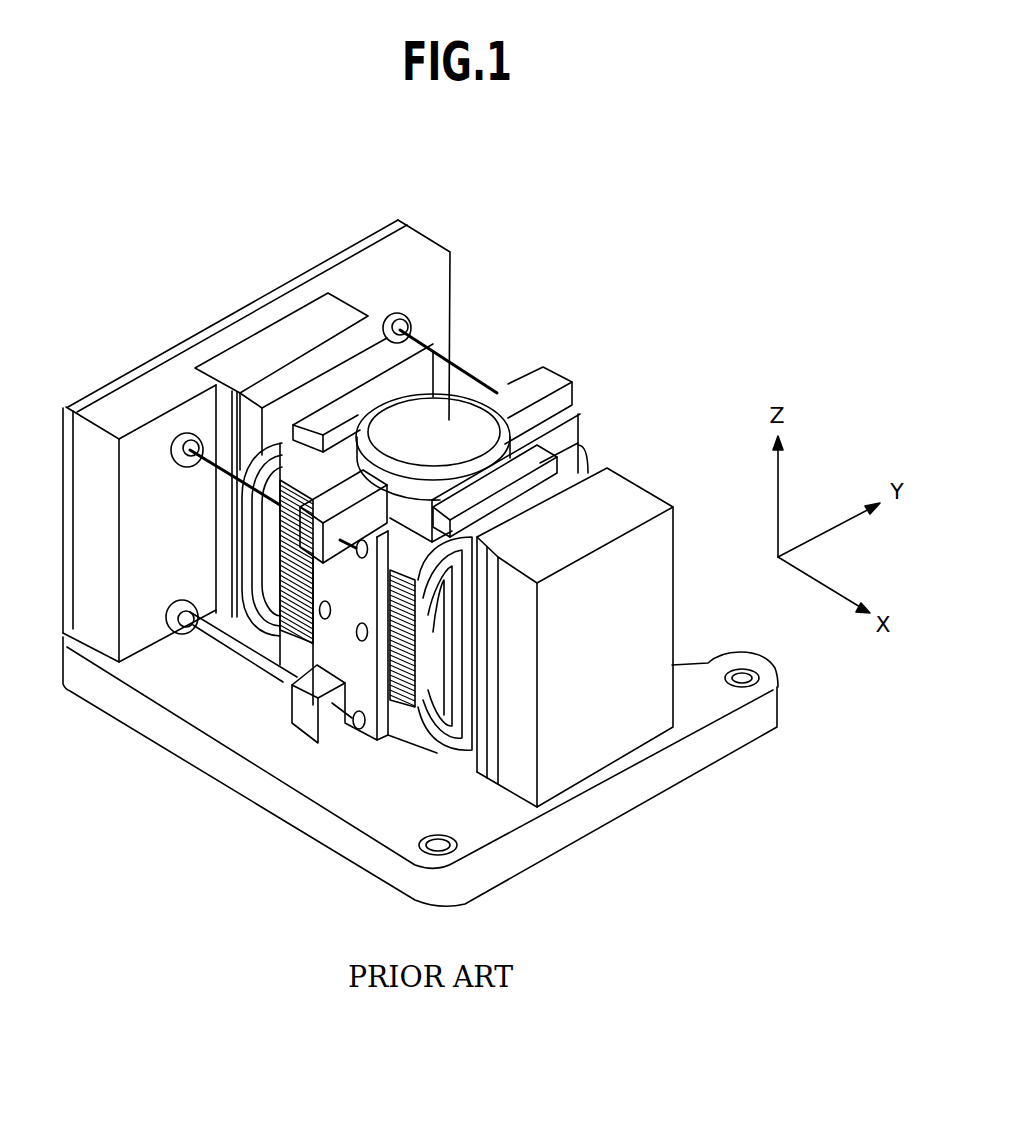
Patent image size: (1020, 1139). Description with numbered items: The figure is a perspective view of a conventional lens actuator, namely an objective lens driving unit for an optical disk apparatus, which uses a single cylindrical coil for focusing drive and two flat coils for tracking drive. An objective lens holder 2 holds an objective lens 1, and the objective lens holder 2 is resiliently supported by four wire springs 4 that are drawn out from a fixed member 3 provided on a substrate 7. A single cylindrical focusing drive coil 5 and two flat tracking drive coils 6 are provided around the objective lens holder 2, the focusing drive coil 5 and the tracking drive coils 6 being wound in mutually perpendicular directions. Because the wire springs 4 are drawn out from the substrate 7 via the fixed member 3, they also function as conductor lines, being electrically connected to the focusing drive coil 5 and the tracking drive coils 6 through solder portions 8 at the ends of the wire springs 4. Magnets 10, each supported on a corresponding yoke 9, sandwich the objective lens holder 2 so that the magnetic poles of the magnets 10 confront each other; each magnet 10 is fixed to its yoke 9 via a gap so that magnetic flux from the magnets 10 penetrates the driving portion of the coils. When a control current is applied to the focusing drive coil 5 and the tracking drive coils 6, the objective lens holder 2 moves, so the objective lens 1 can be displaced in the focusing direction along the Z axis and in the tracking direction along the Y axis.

The objective lens 1 is at (455, 420).
The objective lens holder 2 is at (547, 385).
The fixed member 3 is at (175, 367).
The wire springs 4 is at (207, 462).
The focusing drive coil 5 is at (227, 647).
The tracking drive coils 6 is at (258, 547).
The substrate 7 is at (133, 370).
The solder portions 8 is at (362, 727).
The yoke 9 is at (243, 352).
The magnets 10 is at (315, 362).